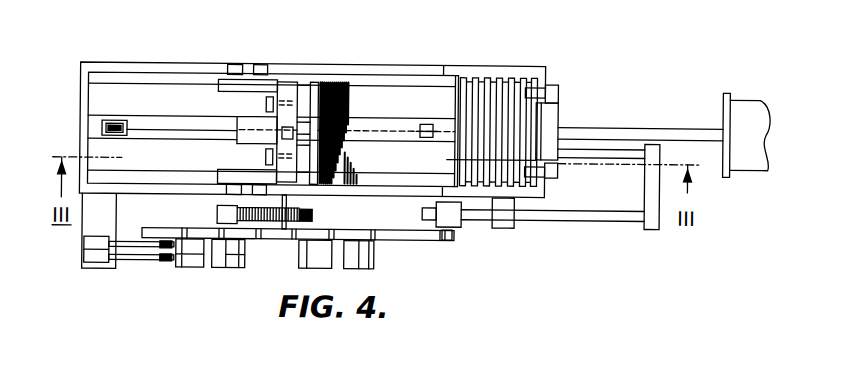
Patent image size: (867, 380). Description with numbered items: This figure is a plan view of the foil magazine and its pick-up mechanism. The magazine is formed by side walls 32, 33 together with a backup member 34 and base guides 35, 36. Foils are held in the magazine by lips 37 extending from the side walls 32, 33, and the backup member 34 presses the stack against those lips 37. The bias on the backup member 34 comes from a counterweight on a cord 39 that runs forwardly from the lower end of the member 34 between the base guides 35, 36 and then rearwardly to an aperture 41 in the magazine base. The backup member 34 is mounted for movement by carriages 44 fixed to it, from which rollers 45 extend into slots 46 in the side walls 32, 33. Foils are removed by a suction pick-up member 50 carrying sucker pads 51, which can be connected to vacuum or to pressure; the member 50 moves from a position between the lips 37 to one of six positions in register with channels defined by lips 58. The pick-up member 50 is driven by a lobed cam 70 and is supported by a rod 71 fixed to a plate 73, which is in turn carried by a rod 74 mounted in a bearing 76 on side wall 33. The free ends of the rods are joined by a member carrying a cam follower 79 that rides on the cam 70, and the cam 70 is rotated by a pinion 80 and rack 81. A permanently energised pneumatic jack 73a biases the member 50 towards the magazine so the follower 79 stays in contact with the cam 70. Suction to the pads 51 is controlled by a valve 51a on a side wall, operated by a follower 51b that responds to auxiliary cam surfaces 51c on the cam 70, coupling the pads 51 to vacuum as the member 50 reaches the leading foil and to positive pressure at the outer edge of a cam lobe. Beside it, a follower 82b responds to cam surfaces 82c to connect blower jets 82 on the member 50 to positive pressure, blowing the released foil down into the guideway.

The side wall 32 is at (130, 62).
The side wall 33 is at (140, 187).
The backup member 34 is at (293, 79).
The base guide 35 is at (368, 95).
The base guide 36 is at (163, 166).
The lip 37 is at (462, 73).
The cord 39 is at (180, 124).
The aperture 41 is at (120, 120).
The carriage 44 is at (225, 78).
The roller 45 is at (257, 61).
The slot 46 is at (415, 64).
The suction pick-up member 50 is at (555, 95).
The sucker pad 51 is at (545, 106).
The valve 51a is at (100, 262).
The follower 51b is at (142, 259).
The auxiliary cam surface 51c is at (240, 259).
The lip 58 is at (483, 73).
The lobed cam 70 is at (292, 238).
The rod 71 is at (618, 148).
The plate 73 is at (652, 220).
The pneumatic jack 73a is at (747, 101).
The rod 74 is at (618, 212).
The bearing 76 is at (508, 219).
The cam follower 79 is at (448, 237).
The pinion 80 is at (315, 211).
The rack 81 is at (218, 212).
The blower jet 82 is at (553, 84).
The follower 82b is at (170, 258).
The cam surface 82c is at (228, 247).